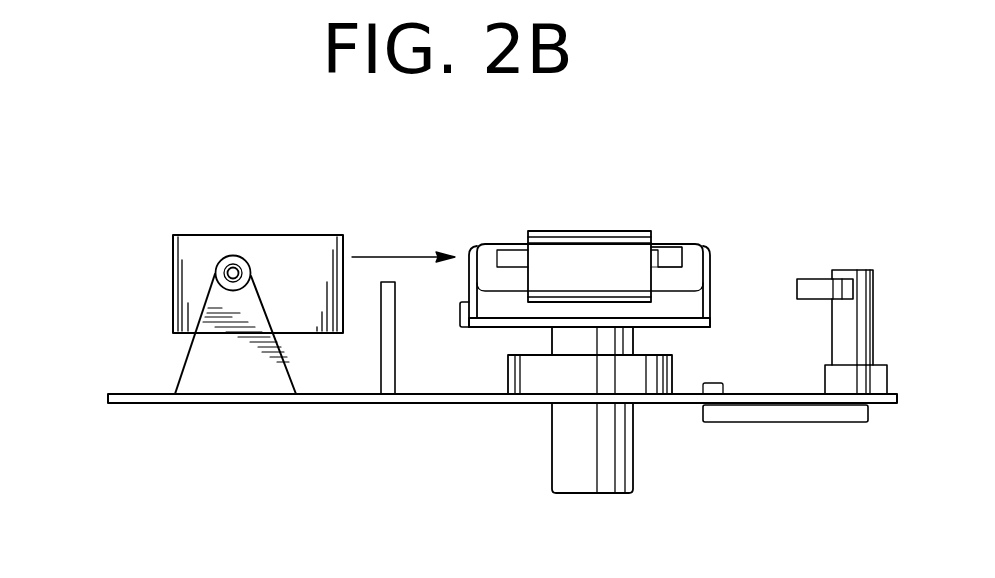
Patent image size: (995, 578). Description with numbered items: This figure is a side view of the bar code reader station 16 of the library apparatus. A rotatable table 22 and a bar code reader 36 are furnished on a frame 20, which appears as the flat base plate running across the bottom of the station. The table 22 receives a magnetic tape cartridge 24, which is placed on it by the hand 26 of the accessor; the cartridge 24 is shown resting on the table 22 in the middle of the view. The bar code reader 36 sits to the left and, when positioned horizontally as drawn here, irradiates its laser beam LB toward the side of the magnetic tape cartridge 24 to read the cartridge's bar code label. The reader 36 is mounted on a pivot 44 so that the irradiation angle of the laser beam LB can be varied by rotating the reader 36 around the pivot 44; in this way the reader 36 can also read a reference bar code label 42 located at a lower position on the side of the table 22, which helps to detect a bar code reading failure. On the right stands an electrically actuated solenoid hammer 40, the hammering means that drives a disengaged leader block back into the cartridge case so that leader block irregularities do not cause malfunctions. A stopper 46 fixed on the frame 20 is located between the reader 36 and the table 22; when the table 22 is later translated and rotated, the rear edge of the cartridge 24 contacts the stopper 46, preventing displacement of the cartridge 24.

The bar code reader station 16 is at (297, 416).
The frame 20 is at (442, 403).
The rotatable table 22 is at (712, 305).
The magnetic tape cartridge 24 is at (671, 233).
The hand 26 is at (578, 247).
The bar code reader 36 is at (267, 245).
The solenoid hammer 40 is at (813, 280).
The reference bar code label 42 is at (463, 313).
The pivot 44 is at (216, 272).
The stopper 46 is at (383, 352).
The laser beam LB is at (391, 256).